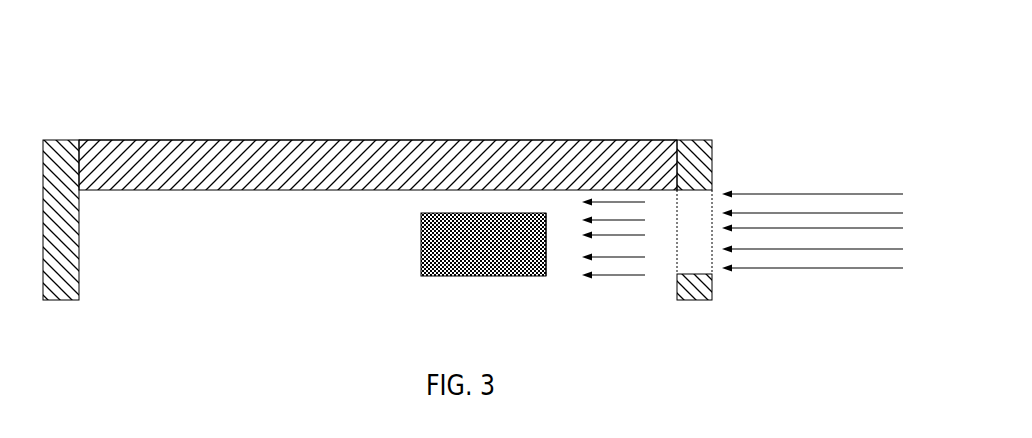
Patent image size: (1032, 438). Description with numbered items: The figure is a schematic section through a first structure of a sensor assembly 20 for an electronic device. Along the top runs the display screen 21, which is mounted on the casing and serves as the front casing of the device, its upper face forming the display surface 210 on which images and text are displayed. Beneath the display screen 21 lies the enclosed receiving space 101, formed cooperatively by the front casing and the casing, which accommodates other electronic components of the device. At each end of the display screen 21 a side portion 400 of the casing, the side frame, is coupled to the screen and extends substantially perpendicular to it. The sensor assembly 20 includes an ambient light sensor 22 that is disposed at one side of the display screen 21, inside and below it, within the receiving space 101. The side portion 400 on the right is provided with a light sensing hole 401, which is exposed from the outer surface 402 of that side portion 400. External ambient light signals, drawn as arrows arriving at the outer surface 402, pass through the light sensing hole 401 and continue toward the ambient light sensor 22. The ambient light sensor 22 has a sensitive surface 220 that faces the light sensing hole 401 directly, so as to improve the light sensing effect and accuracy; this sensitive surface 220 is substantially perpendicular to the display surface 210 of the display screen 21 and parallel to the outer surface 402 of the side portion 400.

The receiving space 101 is at (186, 242).
The display surface 210 is at (269, 132).
The display screen 21 is at (607, 140).
The side portion 400 is at (70, 138).
The light sensing hole 401 is at (688, 238).
The outer surface 402 is at (718, 172).
The sensor assembly 20 is at (462, 266).
The ambient light sensor 22 is at (421, 235).
The sensitive surface 220 is at (547, 243).